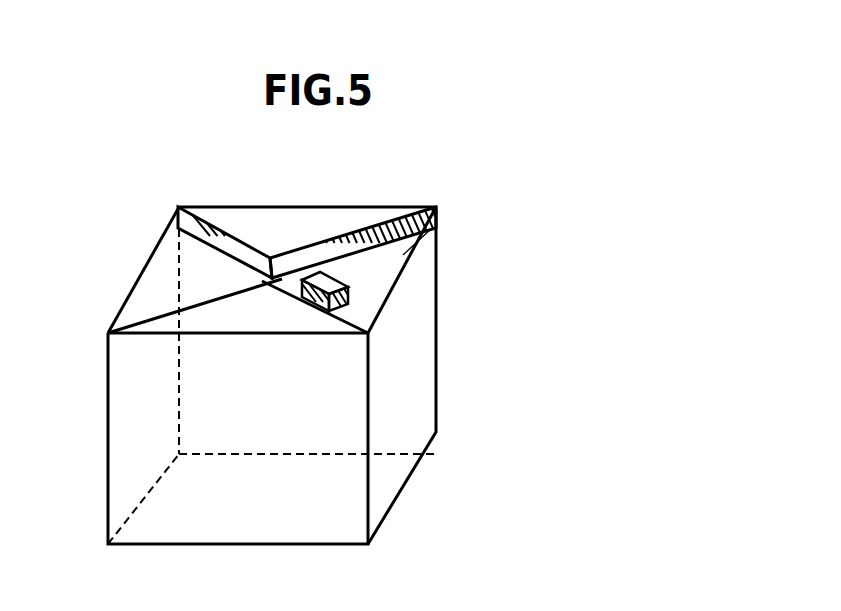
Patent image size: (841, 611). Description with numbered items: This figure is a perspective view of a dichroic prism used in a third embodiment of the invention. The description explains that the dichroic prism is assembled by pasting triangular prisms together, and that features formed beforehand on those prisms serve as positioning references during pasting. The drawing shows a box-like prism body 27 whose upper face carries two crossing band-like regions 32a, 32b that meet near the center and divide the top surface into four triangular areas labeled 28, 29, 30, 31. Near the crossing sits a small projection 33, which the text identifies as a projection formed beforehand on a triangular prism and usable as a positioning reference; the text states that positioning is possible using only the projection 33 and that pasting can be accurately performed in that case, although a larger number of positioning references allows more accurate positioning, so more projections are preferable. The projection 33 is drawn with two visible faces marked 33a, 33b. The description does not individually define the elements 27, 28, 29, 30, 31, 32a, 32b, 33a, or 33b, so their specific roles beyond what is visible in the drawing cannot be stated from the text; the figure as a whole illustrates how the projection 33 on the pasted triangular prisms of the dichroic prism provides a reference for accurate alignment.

The box-shaped body 27 is at (387, 473).
The right top face region 28 is at (437, 229).
The front top face region 29 is at (197, 327).
The rear top face region 30 is at (230, 225).
The left top face region 31 is at (155, 312).
The first diagonal band member 32a is at (175, 236).
The second diagonal band member 32b is at (387, 230).
The projection 33 is at (407, 333).
The front face of block member 33a is at (312, 300).
The side face of block member 33b is at (343, 311).